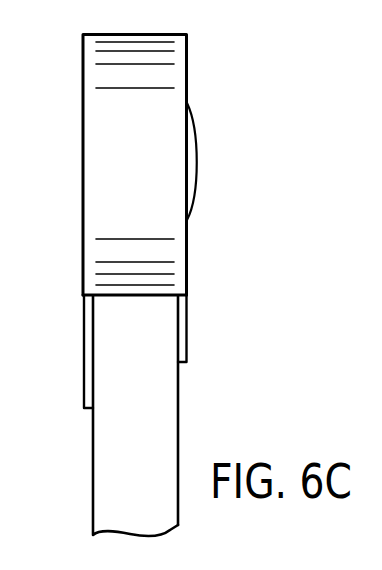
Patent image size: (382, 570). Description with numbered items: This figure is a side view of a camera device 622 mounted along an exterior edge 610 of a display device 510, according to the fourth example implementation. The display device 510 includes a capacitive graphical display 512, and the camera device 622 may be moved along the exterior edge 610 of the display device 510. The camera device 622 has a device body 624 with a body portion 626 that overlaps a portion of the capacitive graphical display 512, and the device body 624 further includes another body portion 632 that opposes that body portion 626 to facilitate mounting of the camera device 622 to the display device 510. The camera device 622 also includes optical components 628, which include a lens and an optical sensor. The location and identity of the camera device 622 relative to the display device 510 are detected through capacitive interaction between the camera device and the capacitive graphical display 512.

The camera device 622 is at (183, 53).
The device body 624 is at (187, 281).
The optical components 628 is at (192, 153).
The exterior edge 610 is at (107, 293).
The body portion 632 is at (88, 380).
The body portion 626 is at (187, 338).
The display device 510 is at (112, 442).
The capacitive graphical display 512 is at (178, 418).